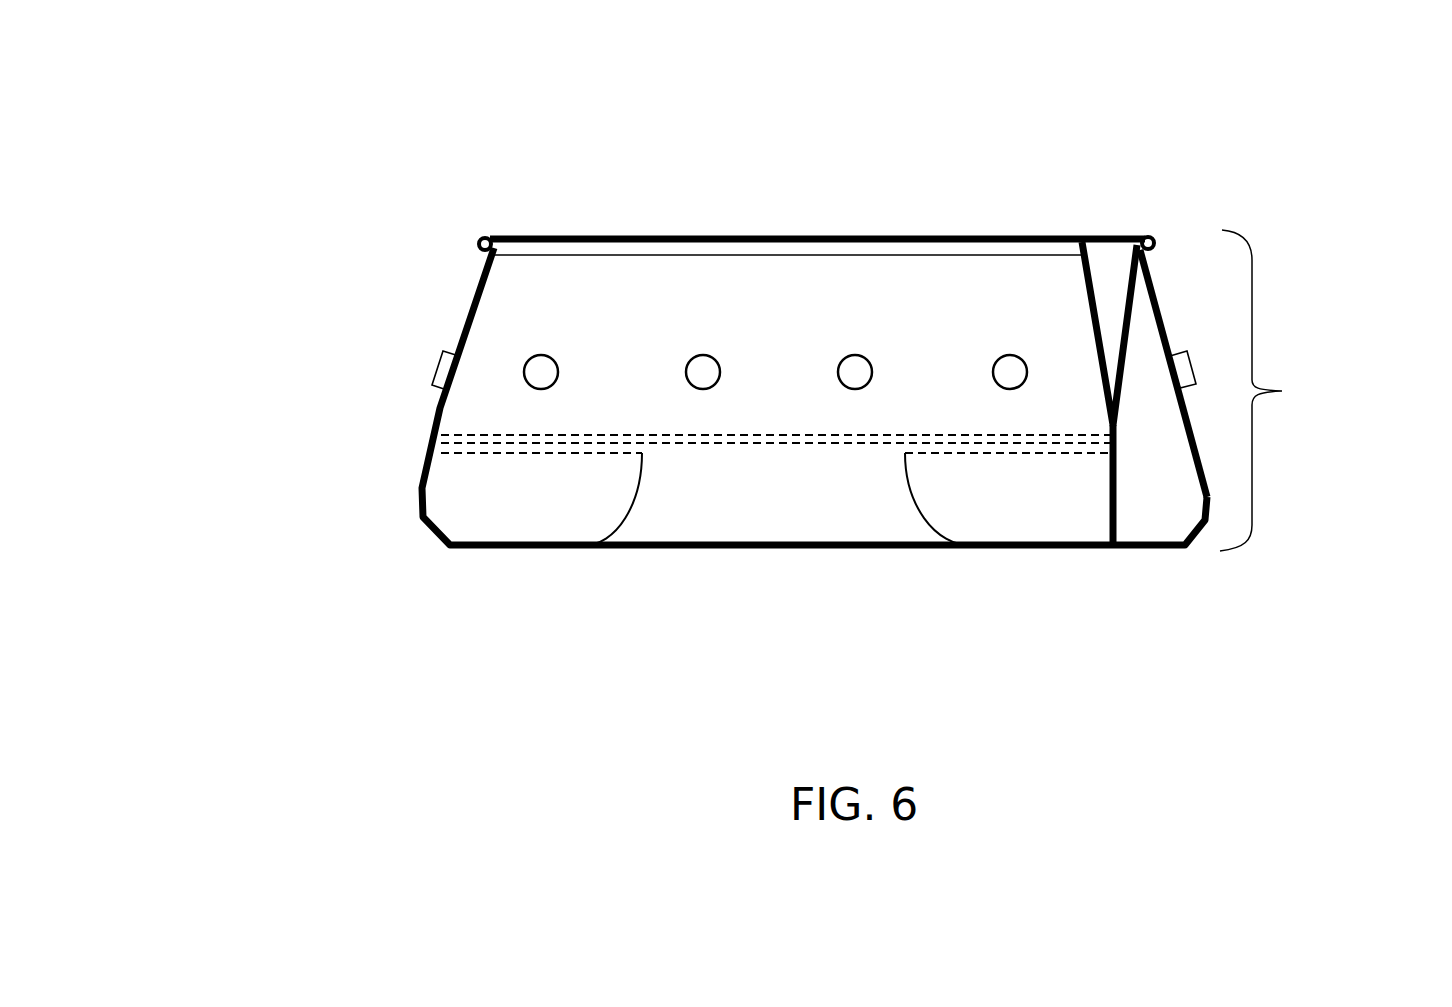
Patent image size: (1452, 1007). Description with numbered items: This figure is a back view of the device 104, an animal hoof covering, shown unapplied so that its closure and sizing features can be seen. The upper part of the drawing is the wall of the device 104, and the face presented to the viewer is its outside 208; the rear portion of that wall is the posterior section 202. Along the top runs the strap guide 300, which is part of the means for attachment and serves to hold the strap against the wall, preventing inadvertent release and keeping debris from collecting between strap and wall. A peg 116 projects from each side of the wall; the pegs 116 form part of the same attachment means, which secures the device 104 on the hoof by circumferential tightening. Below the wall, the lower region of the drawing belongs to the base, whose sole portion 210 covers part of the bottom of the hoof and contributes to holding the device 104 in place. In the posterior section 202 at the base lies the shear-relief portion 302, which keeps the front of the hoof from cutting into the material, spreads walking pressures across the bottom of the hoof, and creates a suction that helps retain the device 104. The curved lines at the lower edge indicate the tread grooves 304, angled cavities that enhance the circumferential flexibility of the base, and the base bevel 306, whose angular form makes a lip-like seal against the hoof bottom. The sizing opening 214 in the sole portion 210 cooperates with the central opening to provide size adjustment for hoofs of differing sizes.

The strap guide 300 is at (522, 245).
The posterior section 202 is at (843, 300).
The outside 208 is at (1057, 345).
The sole portion 210 is at (488, 437).
The shear-relief portion 302 is at (433, 452).
The tread grooves 304 is at (922, 465).
The base bevel 306 is at (642, 470).
The device 104 is at (1286, 390).
The pegs 116 is at (1185, 382).
The sizing opening 214 is at (1117, 473).